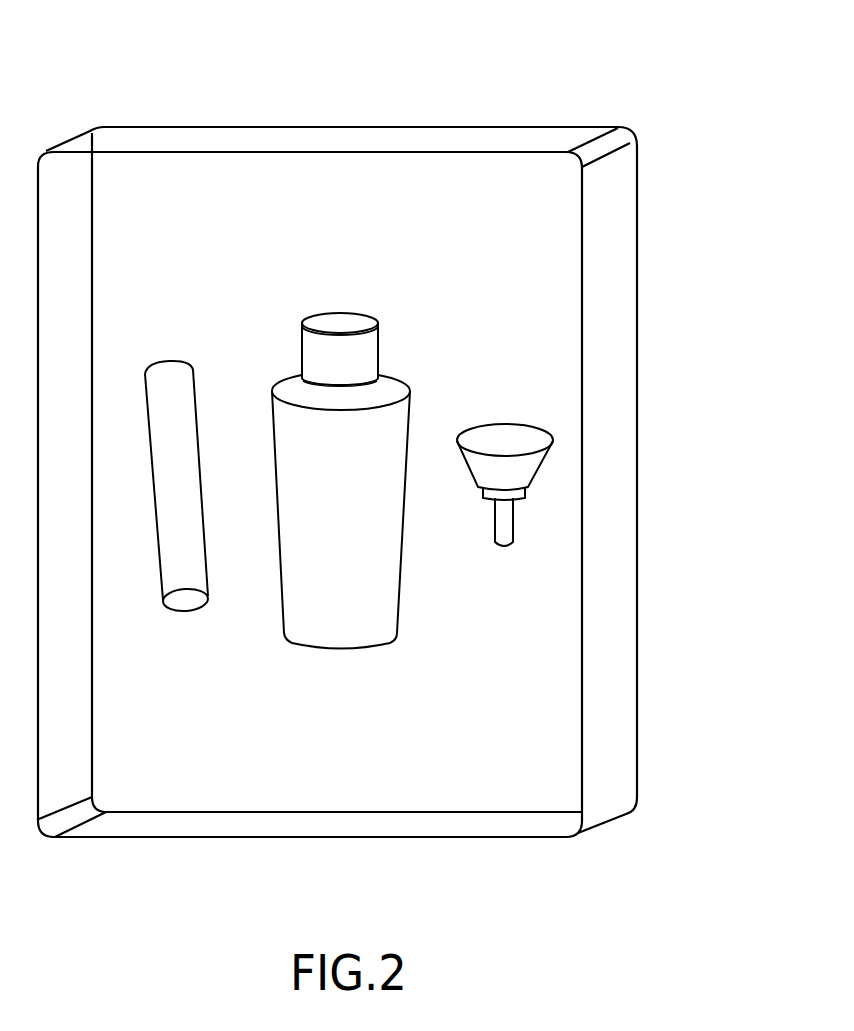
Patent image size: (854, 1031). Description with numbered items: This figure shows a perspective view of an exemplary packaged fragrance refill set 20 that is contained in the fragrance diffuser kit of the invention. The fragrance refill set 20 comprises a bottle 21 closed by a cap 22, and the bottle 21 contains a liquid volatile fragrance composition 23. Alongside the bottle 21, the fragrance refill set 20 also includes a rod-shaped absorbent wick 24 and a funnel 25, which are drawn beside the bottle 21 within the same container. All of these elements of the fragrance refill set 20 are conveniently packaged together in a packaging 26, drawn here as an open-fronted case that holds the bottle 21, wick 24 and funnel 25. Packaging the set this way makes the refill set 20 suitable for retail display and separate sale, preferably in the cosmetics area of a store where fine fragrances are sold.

The fragrance refill set 20 is at (446, 82).
The bottle 21 is at (398, 610).
The cap 22 is at (377, 338).
The liquid volatile fragrance composition 23 is at (395, 418).
The rod-shaped absorbent wick 24 is at (195, 433).
The funnel 25 is at (467, 468).
The packaging 26 is at (613, 243).